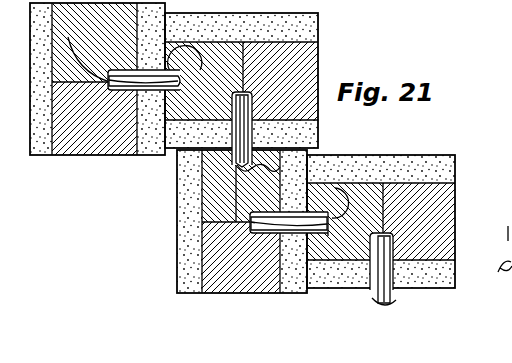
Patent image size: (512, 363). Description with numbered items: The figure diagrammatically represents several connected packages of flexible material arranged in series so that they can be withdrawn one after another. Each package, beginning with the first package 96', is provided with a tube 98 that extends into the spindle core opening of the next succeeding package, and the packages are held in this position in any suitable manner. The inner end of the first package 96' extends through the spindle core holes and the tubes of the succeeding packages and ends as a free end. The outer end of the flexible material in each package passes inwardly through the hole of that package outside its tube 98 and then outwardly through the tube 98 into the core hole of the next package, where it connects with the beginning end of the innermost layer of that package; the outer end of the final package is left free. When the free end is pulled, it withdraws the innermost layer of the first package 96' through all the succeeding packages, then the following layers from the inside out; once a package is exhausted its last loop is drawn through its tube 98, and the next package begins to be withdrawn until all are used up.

The package 96' is at (97, 99).
The tube 98 is at (232, 103).